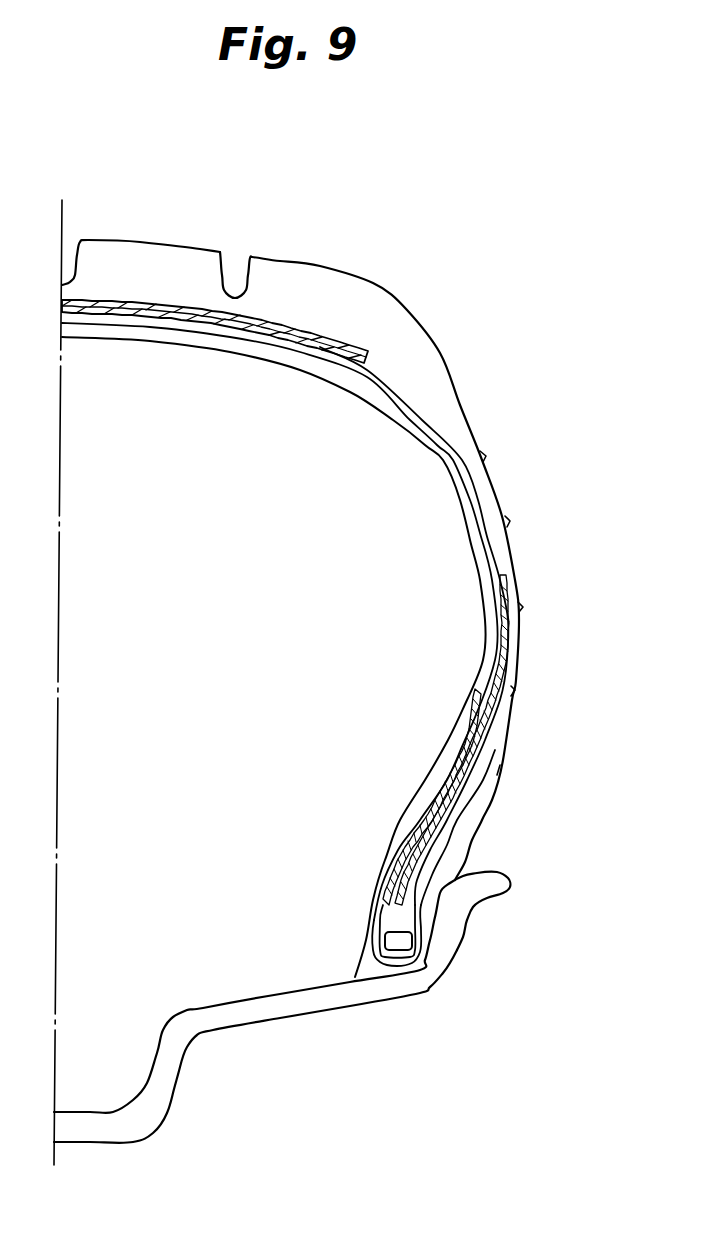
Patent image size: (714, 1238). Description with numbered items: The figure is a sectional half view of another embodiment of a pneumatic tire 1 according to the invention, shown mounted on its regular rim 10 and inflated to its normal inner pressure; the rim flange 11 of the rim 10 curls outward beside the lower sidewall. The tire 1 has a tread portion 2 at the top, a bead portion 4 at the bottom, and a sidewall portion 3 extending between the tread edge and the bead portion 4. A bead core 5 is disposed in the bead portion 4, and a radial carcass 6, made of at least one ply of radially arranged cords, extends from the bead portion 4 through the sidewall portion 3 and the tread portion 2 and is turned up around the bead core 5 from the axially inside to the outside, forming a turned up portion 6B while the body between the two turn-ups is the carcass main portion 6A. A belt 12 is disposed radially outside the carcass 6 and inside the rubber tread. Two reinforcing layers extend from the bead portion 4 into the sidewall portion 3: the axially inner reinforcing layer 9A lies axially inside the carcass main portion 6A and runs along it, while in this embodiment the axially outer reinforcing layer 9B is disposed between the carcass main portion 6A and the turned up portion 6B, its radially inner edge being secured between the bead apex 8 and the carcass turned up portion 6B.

The tire 1 is at (457, 297).
The tread portion 2 is at (191, 244).
The sidewall portion 3 is at (540, 607).
The bead portion 4 is at (374, 869).
The bead core 5 is at (397, 952).
The radial carcass 6 is at (416, 398).
The carcass main portion 6A is at (455, 788).
The carcass turned up portion 6B is at (481, 822).
The bead apex 8 is at (400, 925).
The axially inner reinforcing layer 9A is at (471, 722).
The axially outer reinforcing layer 9B is at (490, 690).
The regular rim 10 is at (298, 1013).
The rim flange 11 is at (468, 920).
The belt 12 is at (304, 325).